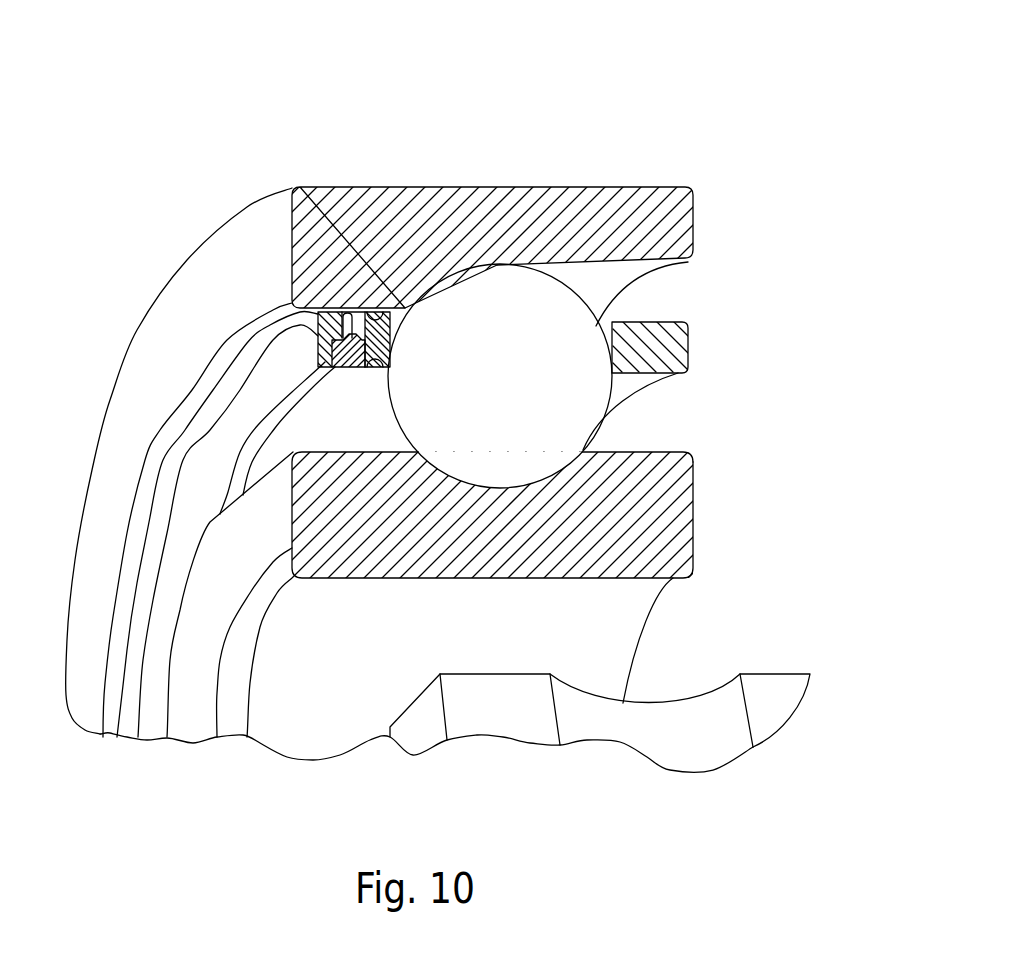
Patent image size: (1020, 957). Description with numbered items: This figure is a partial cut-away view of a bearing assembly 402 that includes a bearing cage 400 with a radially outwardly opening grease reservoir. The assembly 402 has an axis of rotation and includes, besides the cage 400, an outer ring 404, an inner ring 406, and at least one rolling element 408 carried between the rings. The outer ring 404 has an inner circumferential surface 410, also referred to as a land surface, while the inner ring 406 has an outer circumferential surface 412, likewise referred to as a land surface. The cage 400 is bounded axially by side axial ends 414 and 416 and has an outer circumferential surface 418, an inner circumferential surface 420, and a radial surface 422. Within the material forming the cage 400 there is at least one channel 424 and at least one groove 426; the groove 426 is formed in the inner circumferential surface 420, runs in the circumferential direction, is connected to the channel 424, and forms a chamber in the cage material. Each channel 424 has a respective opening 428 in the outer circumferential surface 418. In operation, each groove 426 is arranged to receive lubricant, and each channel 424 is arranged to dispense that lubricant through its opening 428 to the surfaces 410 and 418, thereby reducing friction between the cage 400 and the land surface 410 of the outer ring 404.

The bearing cage 400 is at (673, 392).
The bearing assembly 402 is at (707, 72).
The outer ring 404 is at (565, 185).
The inner ring 406 is at (695, 540).
The rolling element 408 is at (548, 390).
The inner circumferential surface 410 is at (328, 312).
The outer circumferential surface 412 is at (657, 453).
The side axial end 414 is at (217, 393).
The side axial end 416 is at (673, 318).
The outer circumferential surface 418 is at (380, 307).
The inner circumferential surface 420 is at (375, 367).
The radial surface 422 is at (210, 446).
The channel 424 is at (248, 308).
The groove 426 is at (407, 300).
The opening 428 is at (347, 310).